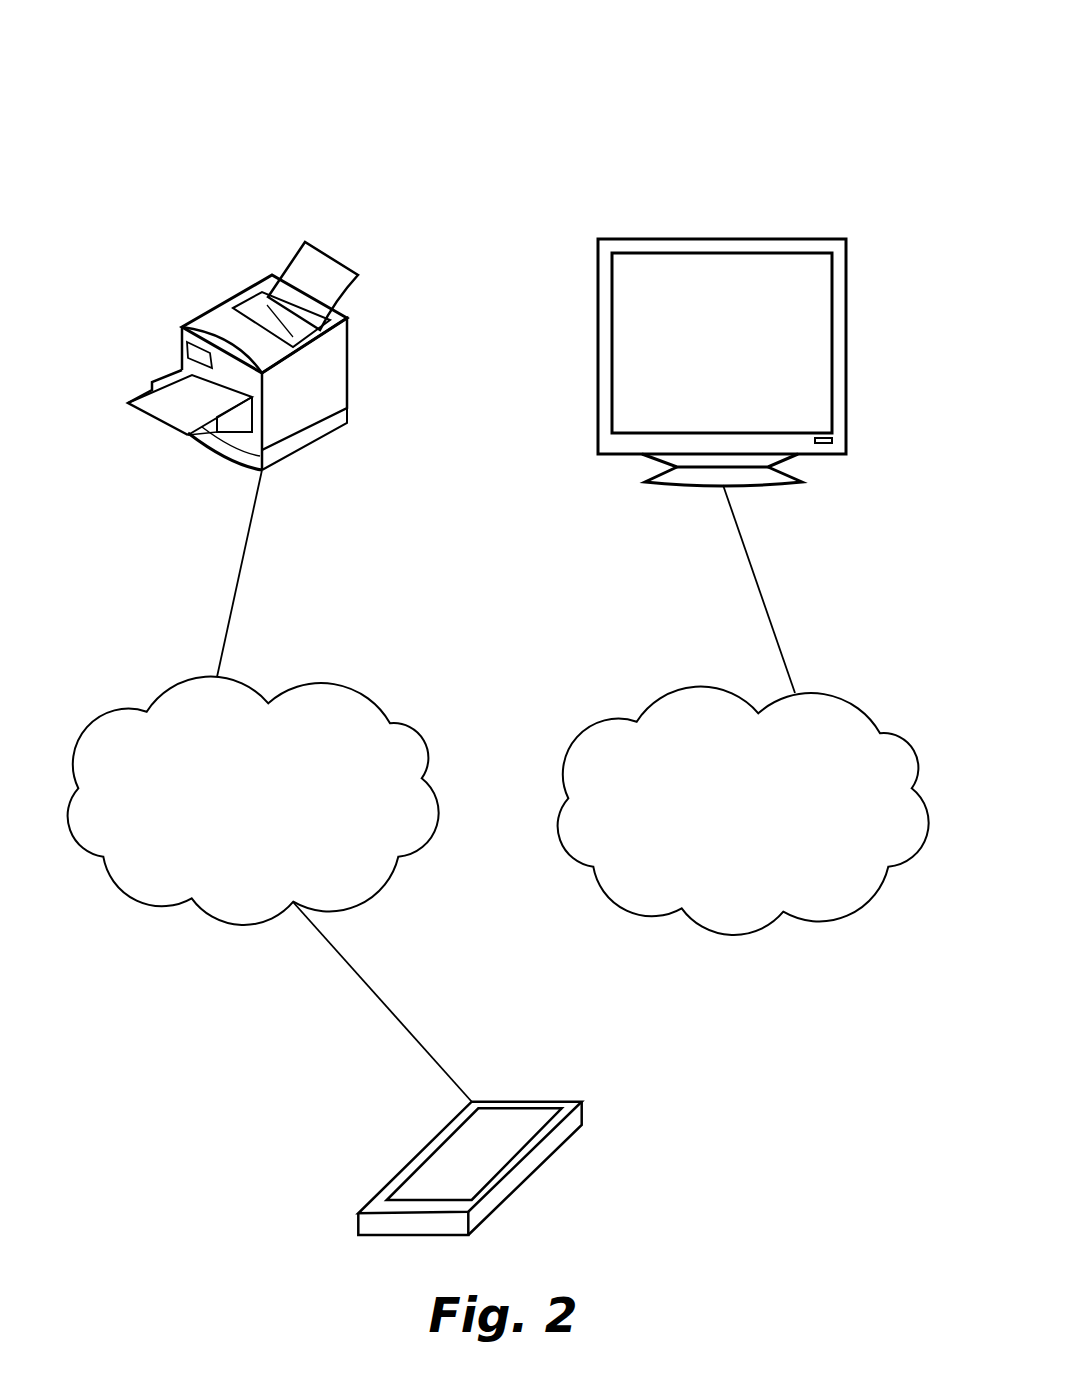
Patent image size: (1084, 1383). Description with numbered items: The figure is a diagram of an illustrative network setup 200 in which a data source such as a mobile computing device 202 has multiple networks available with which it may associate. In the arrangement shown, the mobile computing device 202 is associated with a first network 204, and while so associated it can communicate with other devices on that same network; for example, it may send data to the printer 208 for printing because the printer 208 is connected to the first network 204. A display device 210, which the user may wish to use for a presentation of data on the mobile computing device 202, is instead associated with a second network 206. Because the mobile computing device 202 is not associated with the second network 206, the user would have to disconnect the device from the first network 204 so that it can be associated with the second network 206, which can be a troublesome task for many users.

The network setup 200 is at (190, 154).
The mobile computing device 202 is at (582, 1114).
The first network 204 is at (253, 801).
The second network 206 is at (743, 811).
The printer 208 is at (330, 250).
The display device 210 is at (742, 238).